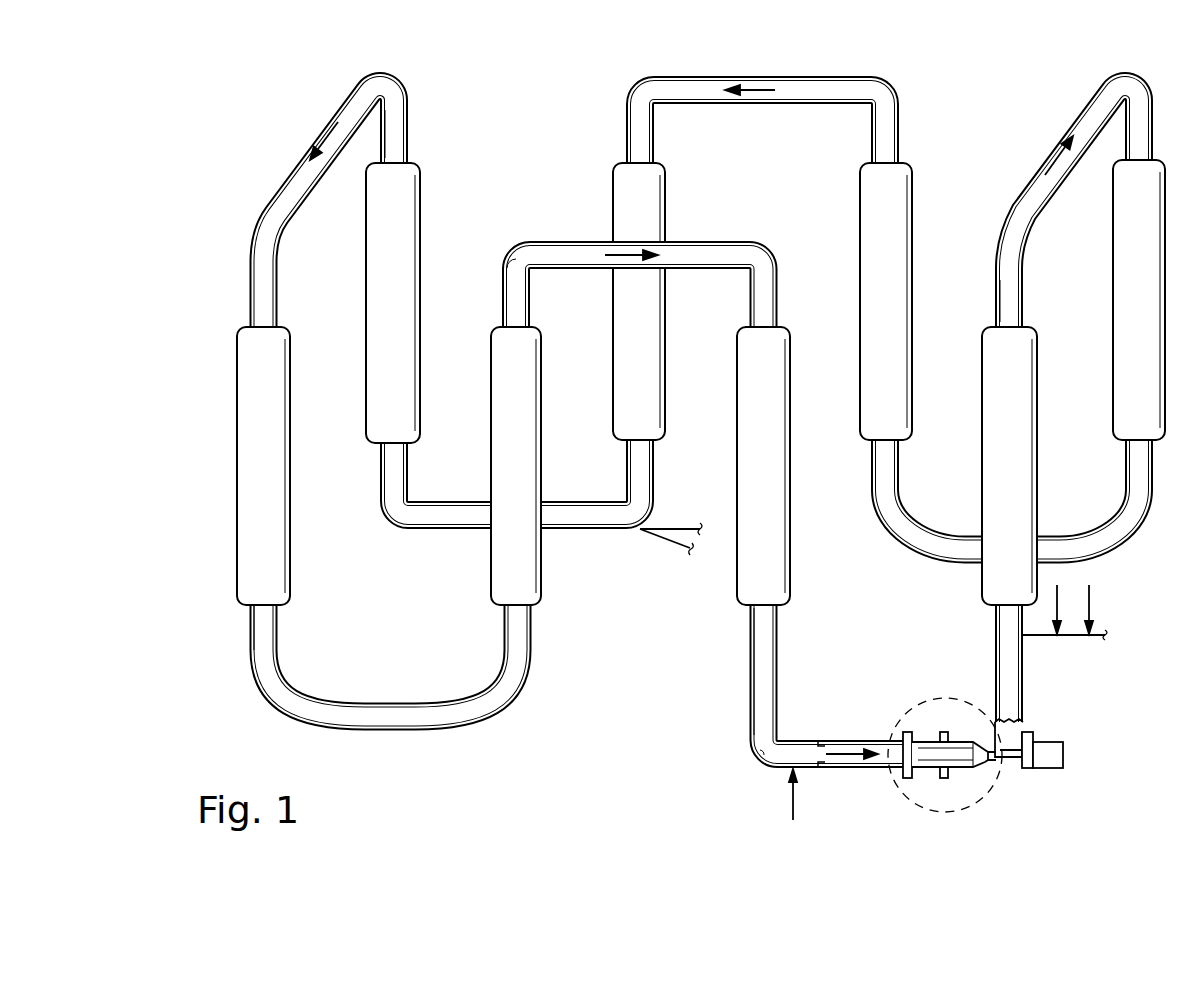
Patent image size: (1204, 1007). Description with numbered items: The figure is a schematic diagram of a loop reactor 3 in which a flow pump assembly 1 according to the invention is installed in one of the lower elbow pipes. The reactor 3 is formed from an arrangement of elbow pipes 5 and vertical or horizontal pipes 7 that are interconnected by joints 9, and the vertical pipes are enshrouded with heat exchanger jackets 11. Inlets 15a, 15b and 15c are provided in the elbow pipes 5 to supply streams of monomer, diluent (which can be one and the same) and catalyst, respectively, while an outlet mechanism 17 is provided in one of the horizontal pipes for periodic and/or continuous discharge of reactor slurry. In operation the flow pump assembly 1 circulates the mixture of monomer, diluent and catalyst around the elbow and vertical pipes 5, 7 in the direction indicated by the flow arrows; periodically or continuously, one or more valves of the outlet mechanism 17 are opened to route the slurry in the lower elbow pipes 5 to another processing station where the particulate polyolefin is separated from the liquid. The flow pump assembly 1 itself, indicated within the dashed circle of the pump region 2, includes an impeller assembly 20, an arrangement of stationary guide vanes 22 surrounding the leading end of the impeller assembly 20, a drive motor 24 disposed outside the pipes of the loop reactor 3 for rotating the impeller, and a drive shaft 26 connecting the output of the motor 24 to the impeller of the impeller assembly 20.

The flow pump assembly 1 is at (1040, 715).
The valve 2 is at (900, 787).
The loop reactor 3 is at (245, 99).
The elbow pipes 5 is at (297, 177).
The vertical or horizontal pipes 7 is at (398, 134).
The joints 9 is at (517, 259).
The heat exchanger jackets 11 is at (252, 482).
The inlet 15a is at (1058, 592).
The inlet 15b is at (1090, 603).
The inlet 15c is at (790, 803).
The outlet mechanism 17 is at (667, 545).
The impeller assembly 20 is at (945, 780).
The stationary guide vanes 22 is at (925, 735).
The drive motor 24 is at (1055, 755).
The drive shaft 26 is at (1003, 758).